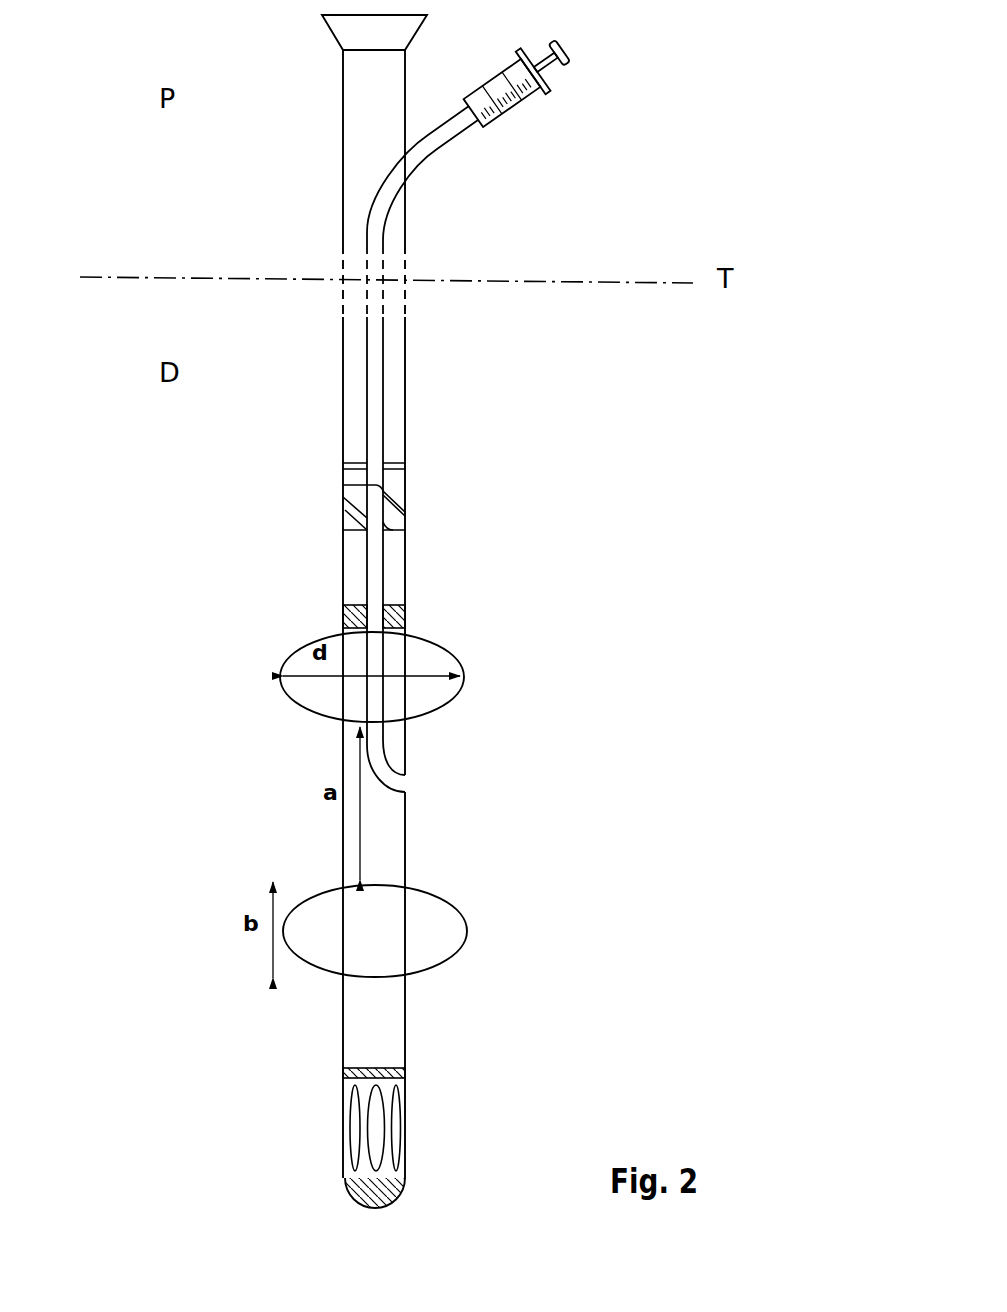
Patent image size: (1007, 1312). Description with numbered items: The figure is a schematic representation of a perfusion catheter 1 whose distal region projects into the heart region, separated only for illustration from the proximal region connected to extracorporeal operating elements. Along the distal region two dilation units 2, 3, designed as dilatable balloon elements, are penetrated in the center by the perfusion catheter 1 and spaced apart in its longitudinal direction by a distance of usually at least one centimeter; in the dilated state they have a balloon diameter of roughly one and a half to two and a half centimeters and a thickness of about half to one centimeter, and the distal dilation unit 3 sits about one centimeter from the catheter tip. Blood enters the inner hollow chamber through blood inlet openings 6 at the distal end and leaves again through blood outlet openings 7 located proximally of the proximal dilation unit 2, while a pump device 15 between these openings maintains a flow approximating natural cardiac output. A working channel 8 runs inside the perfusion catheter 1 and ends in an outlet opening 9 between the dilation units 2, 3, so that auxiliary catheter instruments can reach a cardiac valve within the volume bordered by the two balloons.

The perfusion catheter 1 is at (260, 567).
The dilation unit 2 is at (447, 657).
The dilation unit 3 is at (447, 925).
The blood inlet openings 6 is at (378, 1130).
The blood outlet openings 7 is at (387, 518).
The working channel 8 is at (385, 424).
The outlet opening 9 is at (410, 782).
The pump device 15 is at (405, 612).